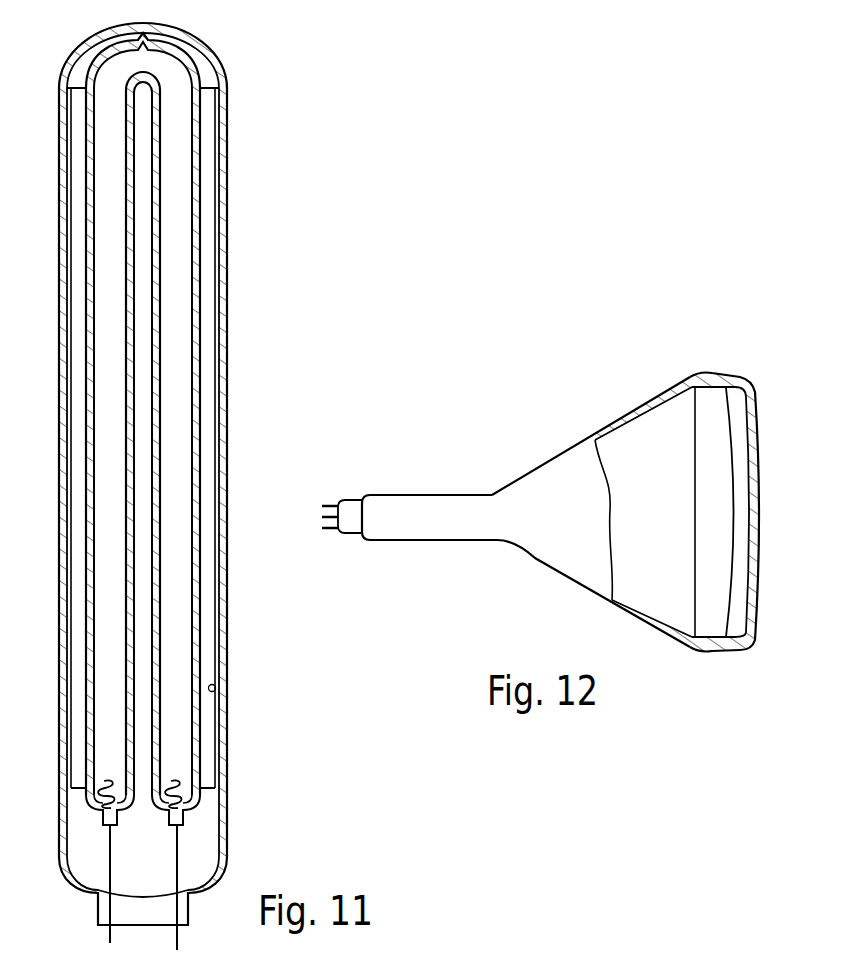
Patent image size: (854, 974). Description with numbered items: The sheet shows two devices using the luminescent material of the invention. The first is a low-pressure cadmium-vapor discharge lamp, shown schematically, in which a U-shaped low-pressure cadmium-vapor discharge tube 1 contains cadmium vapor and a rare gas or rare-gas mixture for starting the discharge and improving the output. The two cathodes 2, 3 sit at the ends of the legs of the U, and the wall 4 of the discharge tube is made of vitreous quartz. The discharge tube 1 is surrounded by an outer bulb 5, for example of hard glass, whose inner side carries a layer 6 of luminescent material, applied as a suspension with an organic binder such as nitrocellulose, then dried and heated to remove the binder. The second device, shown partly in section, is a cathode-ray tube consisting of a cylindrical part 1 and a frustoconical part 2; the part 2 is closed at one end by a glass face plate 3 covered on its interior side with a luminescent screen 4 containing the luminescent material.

In FIG. 11, the low-pressure cadmium-vapor discharge tube 1 is at (174, 348).
In FIG. 12, the low-pressure cadmium-vapor discharge tube 1 is at (433, 492).
In FIG. 11, the cathode 2 is at (104, 797).
In FIG. 12, the cathode 2 is at (542, 465).
In FIG. 11, the cathode 3 is at (182, 801).
In FIG. 12, the cathode 3 is at (755, 531).
In FIG. 11, the wall 4 is at (200, 460).
In FIG. 12, the wall 4 is at (740, 467).
In FIG. 11, the outer bulb 5 is at (227, 596).
In FIG. 11, the layer of luminescent material 6 is at (216, 677).